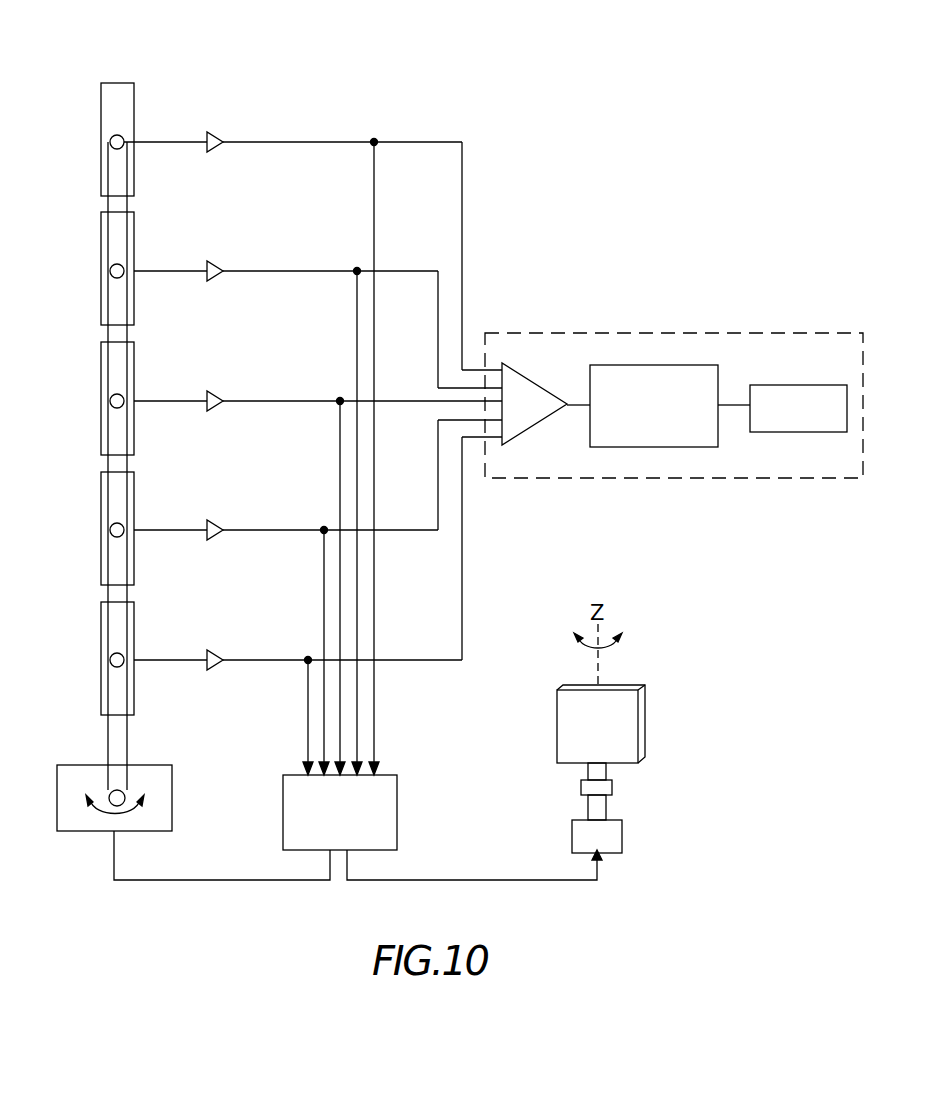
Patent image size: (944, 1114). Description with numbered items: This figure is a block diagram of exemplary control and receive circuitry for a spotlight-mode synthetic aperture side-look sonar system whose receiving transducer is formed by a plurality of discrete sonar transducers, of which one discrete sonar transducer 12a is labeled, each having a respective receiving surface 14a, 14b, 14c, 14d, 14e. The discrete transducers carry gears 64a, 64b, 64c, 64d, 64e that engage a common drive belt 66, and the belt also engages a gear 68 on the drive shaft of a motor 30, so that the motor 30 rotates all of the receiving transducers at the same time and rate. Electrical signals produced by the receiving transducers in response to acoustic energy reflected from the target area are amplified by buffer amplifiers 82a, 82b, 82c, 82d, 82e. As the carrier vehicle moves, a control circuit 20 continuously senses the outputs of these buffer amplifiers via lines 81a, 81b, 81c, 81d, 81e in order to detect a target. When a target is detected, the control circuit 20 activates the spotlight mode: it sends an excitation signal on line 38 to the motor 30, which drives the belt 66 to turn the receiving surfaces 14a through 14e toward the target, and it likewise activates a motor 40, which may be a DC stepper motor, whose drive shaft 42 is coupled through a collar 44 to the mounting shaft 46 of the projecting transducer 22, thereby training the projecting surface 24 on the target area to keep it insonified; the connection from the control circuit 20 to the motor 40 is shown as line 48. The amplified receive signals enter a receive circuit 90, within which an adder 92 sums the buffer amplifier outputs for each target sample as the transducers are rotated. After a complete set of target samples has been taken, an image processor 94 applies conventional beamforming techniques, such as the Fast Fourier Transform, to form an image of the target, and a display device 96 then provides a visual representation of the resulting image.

The discrete sonar transducer 12a is at (115, 83).
The receiving surface 14a is at (101, 120).
The receiving surface 14b is at (101, 249).
The receiving surface 14c is at (101, 379).
The receiving surface 14d is at (101, 509).
The receiving surface 14e is at (101, 639).
The gear 64a is at (122, 136).
The gear 64b is at (122, 265).
The gear 64c is at (122, 395).
The gear 64d is at (122, 524).
The gear 64e is at (122, 654).
The buffer amplifier 82a is at (215, 134).
The buffer amplifier 82b is at (215, 263).
The buffer amplifier 82c is at (215, 393).
The buffer amplifier 82d is at (215, 522).
The buffer amplifier 82e is at (215, 652).
The line 81a is at (374, 182).
The line 81b is at (357, 302).
The line 81c is at (340, 432).
The line 81d is at (324, 558).
The line 81e is at (308, 688).
The adder 92 is at (525, 376).
The receive circuit 90 is at (562, 464).
The image processor 94 is at (640, 365).
The display device 96 is at (800, 385).
The control circuit 20 is at (397, 826).
The motor 30 is at (172, 808).
The drive belt 66 is at (108, 748).
The gear 68 is at (122, 790).
The line 38 is at (192, 880).
The control line 48 is at (448, 880).
The projecting transducer 22 is at (622, 690).
The projecting surface 24 is at (628, 728).
The collar 44 is at (588, 772).
The mounting shaft 46 is at (612, 790).
The drive shaft 42 is at (588, 810).
The motor 40 is at (615, 840).